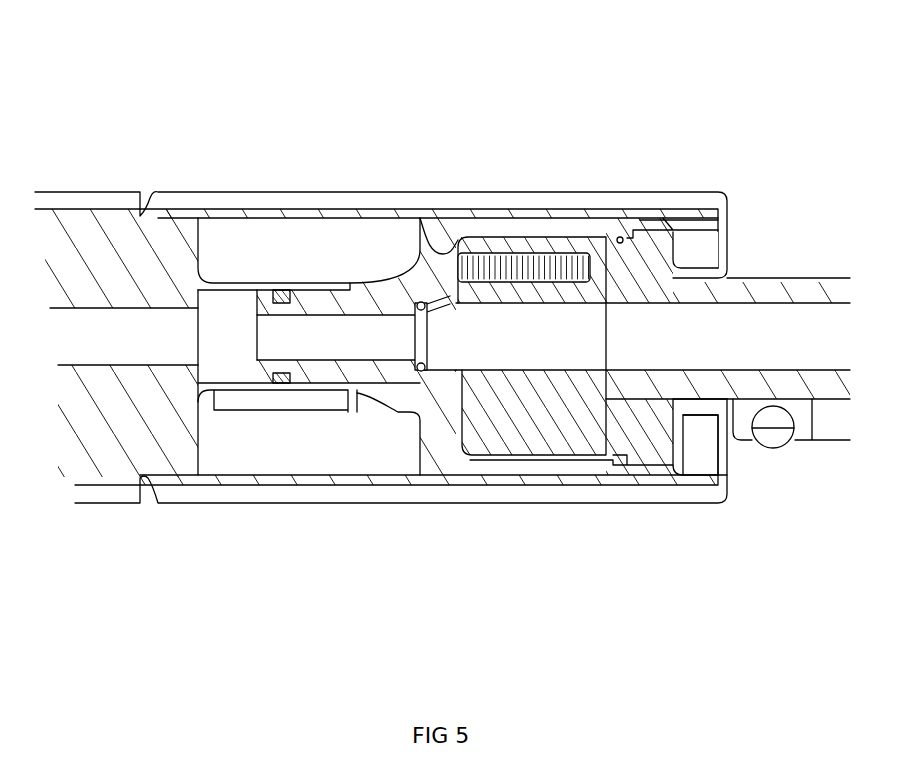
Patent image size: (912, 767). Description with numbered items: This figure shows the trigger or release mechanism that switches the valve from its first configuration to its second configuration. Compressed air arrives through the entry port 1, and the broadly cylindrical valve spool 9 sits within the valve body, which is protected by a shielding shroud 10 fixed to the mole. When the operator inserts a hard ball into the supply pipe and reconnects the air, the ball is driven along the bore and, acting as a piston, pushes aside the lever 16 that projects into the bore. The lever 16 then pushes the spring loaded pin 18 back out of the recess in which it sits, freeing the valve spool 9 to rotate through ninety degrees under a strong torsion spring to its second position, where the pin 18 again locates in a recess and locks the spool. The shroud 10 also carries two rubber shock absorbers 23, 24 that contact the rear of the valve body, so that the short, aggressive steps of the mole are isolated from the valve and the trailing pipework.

The entry port 1 is at (755, 337).
The valve spool 9 is at (550, 405).
The shielding shroud 10 is at (246, 200).
The lever 16 is at (447, 320).
The spring loaded pin 18 is at (455, 240).
The rubber shock absorber 23 is at (705, 252).
The rubber shock absorber 24 is at (698, 452).